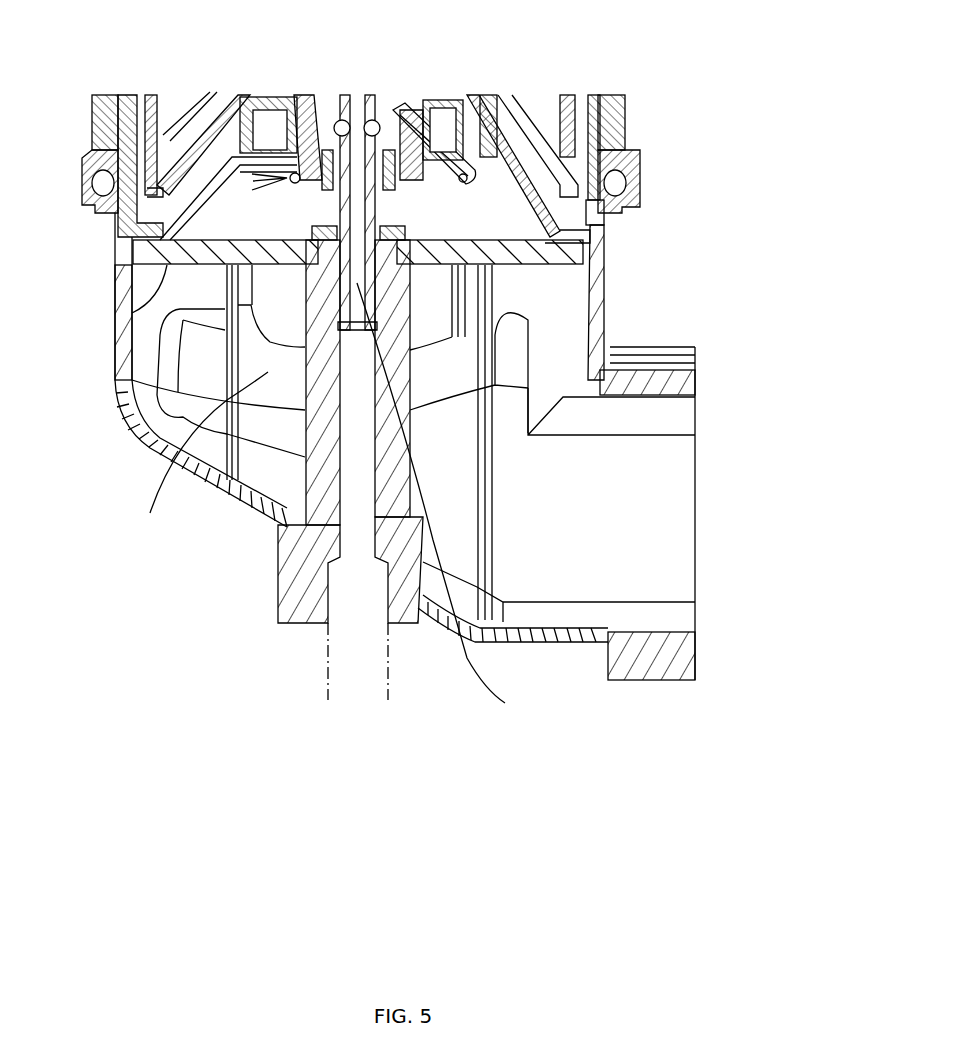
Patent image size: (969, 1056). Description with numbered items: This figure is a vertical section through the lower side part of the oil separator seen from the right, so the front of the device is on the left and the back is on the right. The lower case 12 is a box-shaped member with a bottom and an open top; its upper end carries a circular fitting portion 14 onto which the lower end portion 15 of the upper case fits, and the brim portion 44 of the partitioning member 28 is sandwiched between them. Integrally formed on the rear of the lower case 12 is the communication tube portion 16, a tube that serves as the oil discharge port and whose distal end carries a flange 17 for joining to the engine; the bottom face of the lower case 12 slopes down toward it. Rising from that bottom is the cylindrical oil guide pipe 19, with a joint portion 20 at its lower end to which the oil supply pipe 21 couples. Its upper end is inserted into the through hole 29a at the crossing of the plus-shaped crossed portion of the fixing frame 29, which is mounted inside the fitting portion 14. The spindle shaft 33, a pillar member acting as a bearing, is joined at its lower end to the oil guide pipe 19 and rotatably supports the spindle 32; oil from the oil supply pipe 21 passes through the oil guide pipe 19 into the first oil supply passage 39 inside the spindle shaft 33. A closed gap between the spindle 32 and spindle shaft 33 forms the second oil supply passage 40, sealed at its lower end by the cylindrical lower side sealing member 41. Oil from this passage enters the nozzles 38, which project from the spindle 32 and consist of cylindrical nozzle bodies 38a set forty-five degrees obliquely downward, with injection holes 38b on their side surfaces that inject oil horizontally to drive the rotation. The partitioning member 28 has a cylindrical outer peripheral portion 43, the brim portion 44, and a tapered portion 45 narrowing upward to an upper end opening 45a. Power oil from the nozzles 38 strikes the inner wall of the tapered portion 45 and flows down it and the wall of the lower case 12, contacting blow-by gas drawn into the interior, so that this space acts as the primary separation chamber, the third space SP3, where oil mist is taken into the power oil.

The lower case 12 is at (117, 408).
The fitting portion 14 is at (118, 185).
The lower end portion 15 is at (80, 179).
The communication tube portion 16 is at (647, 600).
The flange 17 is at (650, 683).
The oil guide pipe 19 is at (305, 442).
The joint portion 20 is at (303, 624).
The oil supply pipe 21 is at (390, 660).
The partitioning member 28 is at (522, 100).
The fixing frame 29 is at (133, 305).
The through hole 29a is at (397, 243).
The spindle 32 is at (308, 105).
The spindle shaft 33 is at (358, 95).
The nozzles 38 is at (395, 56).
The nozzle bodies 38a is at (410, 100).
The injection holes 38b is at (457, 100).
The first oil supply passage 39 is at (505, 703).
The second oil supply passage 40 is at (336, 110).
The lower side sealing member 41 is at (292, 110).
The outer peripheral portion 43 is at (128, 100).
The brim portion 44 is at (100, 162).
The tapered portion 45 is at (140, 243).
The upper end opening 45a is at (228, 110).
The third space SP3 is at (128, 534).